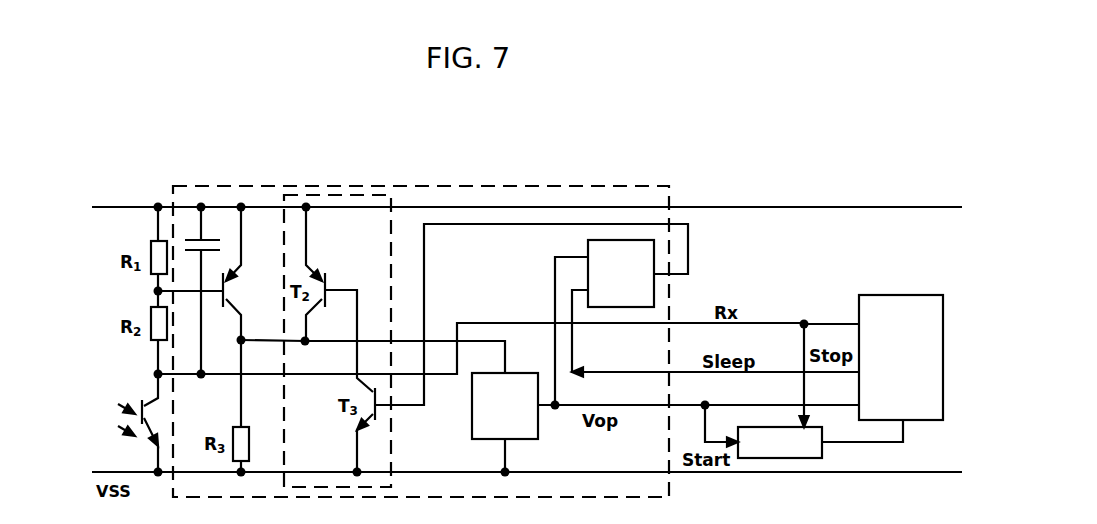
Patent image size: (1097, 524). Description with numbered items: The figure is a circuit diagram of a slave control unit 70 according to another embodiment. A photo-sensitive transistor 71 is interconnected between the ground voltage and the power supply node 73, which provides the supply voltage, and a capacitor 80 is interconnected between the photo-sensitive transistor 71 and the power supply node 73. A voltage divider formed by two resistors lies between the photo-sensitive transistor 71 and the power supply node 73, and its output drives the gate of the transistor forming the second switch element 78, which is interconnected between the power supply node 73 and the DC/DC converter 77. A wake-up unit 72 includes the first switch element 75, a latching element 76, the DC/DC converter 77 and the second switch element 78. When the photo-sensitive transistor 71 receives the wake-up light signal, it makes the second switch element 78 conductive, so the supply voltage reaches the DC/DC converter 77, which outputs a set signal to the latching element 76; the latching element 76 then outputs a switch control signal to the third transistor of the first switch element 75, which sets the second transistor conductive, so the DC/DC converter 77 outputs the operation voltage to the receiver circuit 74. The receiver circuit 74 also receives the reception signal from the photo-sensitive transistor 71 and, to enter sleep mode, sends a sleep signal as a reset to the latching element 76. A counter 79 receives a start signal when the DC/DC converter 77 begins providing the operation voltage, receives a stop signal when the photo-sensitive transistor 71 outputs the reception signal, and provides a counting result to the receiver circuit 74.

The slave control unit 70 is at (778, 234).
The photo-sensitive transistor 71 is at (109, 425).
The wake-up unit 72 is at (455, 186).
The power supply node 73 is at (103, 211).
The receiver circuit 74 is at (901, 357).
The first switch element 75 is at (336, 195).
The latching element 76 is at (707, 322).
The DC/DC converter 77 is at (505, 422).
The second switch element 78 is at (247, 274).
The counter 79 is at (804, 391).
The capacitor 80 is at (183, 230).